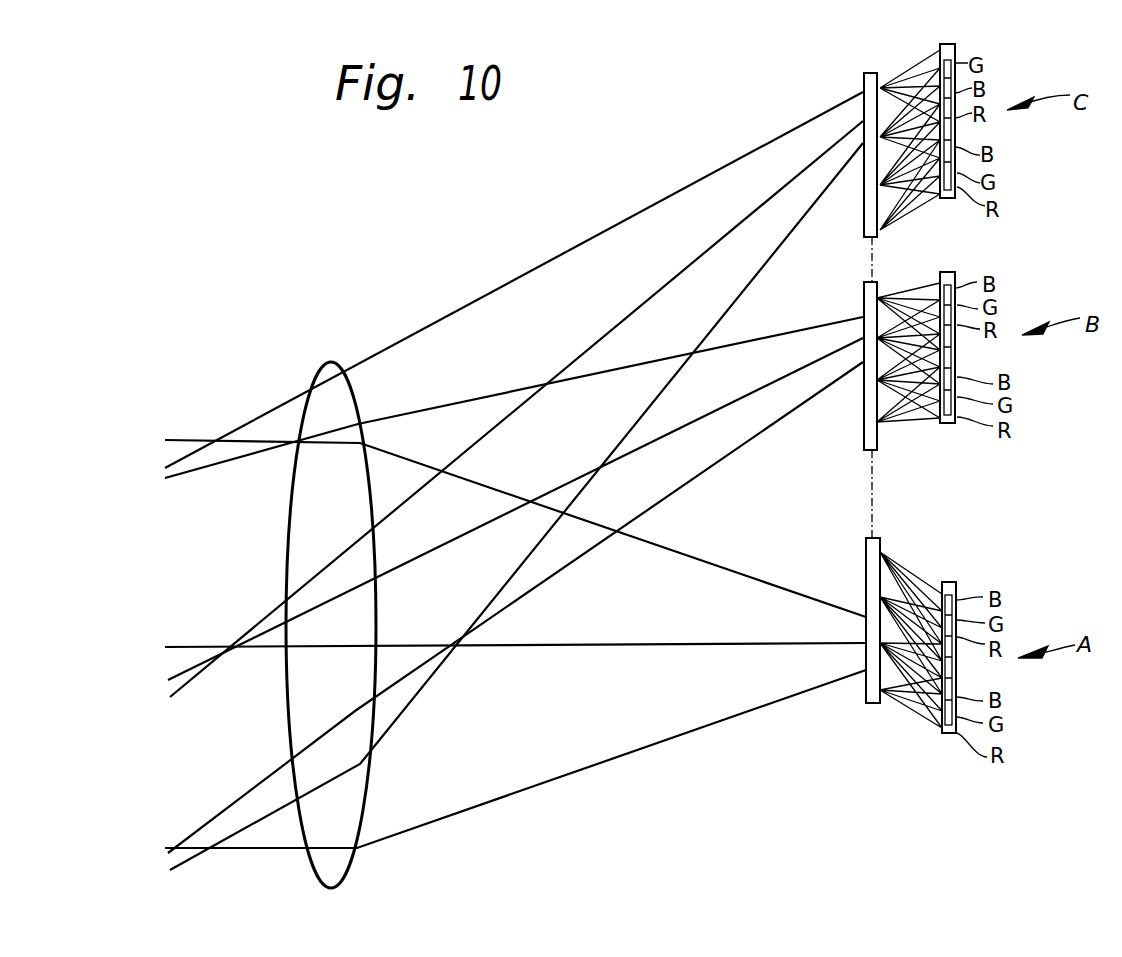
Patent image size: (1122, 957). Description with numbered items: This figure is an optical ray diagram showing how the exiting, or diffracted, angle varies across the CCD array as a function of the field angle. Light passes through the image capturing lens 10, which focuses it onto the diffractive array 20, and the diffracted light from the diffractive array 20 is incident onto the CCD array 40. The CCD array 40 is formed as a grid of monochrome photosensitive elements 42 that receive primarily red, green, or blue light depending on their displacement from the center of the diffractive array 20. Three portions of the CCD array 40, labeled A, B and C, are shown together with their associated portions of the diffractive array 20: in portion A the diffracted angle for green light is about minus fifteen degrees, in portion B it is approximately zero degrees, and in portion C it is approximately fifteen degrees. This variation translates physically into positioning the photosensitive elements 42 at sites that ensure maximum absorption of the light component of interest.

The image capturing lens 10 is at (329, 362).
The diffractive array 20 is at (866, 690).
The CCD array 40 is at (955, 360).
The photosensitive elements 42 is at (955, 137).